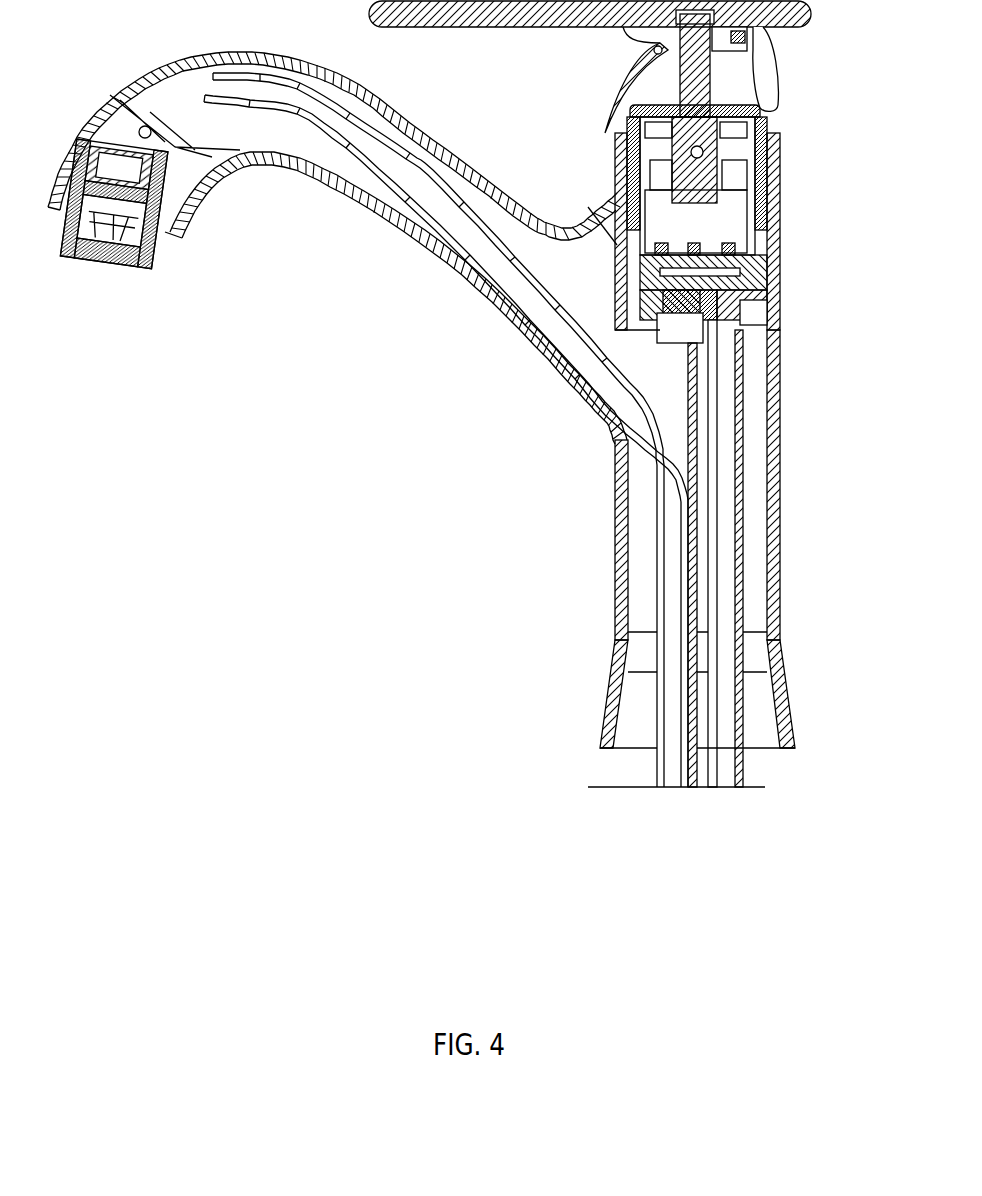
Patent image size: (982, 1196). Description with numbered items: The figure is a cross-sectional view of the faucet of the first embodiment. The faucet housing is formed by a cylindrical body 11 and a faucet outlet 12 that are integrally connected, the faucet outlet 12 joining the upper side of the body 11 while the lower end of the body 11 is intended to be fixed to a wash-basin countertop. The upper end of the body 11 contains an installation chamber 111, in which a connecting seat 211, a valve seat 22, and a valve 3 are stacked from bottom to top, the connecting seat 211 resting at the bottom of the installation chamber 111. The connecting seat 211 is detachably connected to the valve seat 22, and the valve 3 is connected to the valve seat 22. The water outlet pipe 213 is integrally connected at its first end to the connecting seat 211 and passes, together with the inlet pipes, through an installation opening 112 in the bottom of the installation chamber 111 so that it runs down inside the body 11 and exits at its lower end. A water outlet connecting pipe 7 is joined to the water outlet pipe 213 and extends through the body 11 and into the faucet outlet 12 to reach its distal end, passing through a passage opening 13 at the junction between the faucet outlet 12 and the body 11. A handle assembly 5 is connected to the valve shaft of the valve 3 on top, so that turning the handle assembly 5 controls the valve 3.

The body 11 is at (778, 565).
The installation chamber 111 is at (592, 218).
The installation opening 112 is at (753, 323).
The faucet outlet 12 is at (445, 280).
The passage opening 13 is at (607, 382).
The connecting seat 211 is at (700, 302).
The water outlet pipe 213 is at (738, 460).
The valve seat 22 is at (700, 258).
The valve 3 is at (708, 218).
The handle assembly 5 is at (703, 77).
The water outlet connecting pipe 7 is at (625, 435).